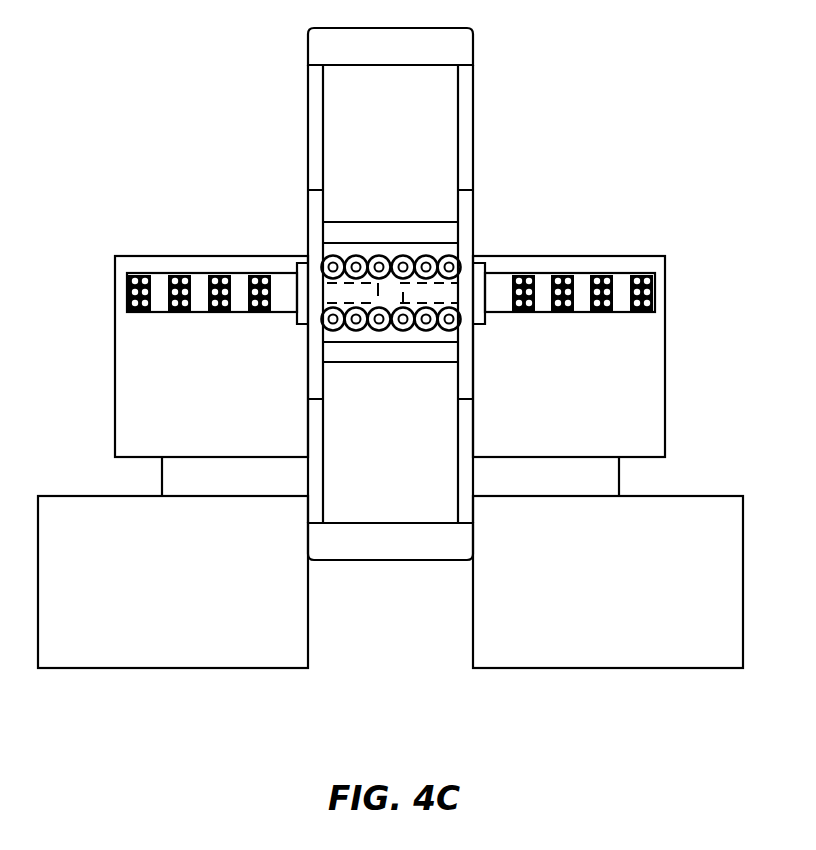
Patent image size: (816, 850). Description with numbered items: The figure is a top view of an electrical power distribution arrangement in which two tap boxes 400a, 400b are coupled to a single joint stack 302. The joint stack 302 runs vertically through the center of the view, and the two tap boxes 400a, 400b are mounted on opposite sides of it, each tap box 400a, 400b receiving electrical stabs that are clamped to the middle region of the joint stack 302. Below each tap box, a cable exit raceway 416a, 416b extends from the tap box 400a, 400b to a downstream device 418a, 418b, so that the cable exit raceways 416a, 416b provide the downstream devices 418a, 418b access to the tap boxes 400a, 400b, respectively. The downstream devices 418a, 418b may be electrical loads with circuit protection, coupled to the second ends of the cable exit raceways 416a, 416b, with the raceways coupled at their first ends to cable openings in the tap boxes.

The joint stack 302 is at (473, 222).
The tap box 400a is at (665, 372).
The tap box 400b is at (115, 376).
The cable exit raceway 416a is at (619, 475).
The cable exit raceway 416b is at (162, 478).
The downstream device 418a is at (608, 582).
The downstream device 418b is at (173, 582).